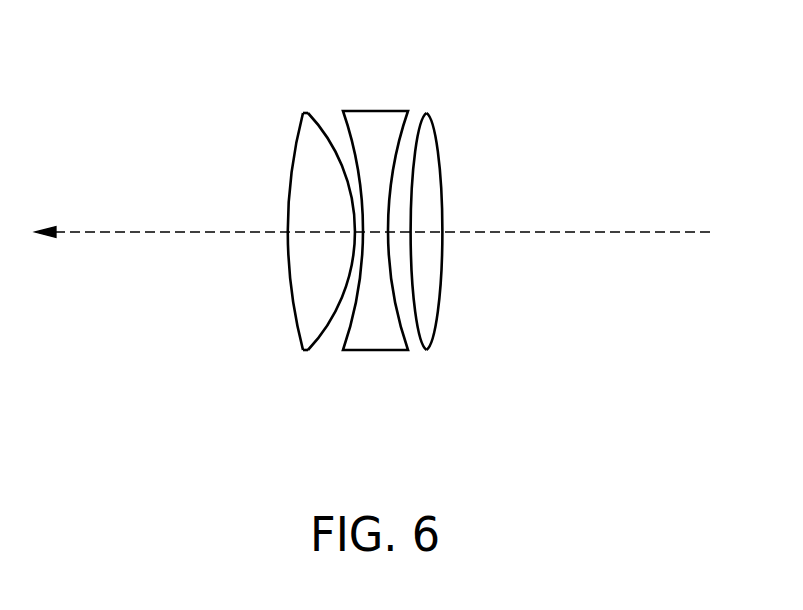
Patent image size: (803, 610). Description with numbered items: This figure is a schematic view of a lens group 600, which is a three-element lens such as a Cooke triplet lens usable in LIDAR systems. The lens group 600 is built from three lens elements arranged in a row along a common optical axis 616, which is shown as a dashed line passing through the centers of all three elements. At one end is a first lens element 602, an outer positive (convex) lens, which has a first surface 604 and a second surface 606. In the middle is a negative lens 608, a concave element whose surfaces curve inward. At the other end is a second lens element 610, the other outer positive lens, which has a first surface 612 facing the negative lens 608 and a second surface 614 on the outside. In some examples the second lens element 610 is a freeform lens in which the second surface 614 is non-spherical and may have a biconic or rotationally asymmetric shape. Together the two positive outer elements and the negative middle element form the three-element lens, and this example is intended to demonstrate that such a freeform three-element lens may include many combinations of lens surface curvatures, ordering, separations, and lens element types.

The lens group 600 is at (679, 34).
The first lens element 602 is at (466, 232).
The first surface 604 is at (440, 128).
The second surface 606 is at (416, 131).
The negative lens 608 is at (397, 346).
The second lens element 610 is at (310, 206).
The first surface 612 is at (325, 127).
The second surface 614 is at (300, 128).
The optical axis 616 is at (58, 230).